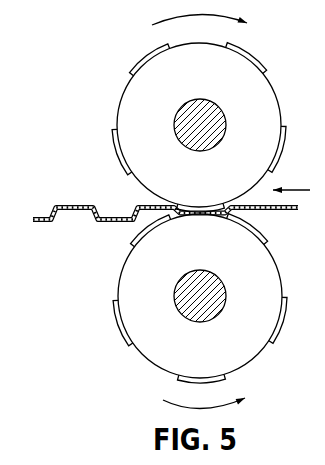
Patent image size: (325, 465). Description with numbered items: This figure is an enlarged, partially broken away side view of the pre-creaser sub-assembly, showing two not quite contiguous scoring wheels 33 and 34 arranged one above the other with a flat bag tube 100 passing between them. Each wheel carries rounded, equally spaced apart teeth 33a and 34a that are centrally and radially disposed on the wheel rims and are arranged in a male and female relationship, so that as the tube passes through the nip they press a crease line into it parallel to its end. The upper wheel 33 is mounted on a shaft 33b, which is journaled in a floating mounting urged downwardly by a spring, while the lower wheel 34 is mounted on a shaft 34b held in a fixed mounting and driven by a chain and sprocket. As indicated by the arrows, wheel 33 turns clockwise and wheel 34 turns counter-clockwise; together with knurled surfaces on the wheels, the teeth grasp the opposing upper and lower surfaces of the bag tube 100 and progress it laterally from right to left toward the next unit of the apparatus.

The scoring wheel 33 is at (267, 98).
The teeth 33a is at (261, 64).
The shaft 33b is at (176, 124).
The scoring wheel 34 is at (264, 268).
The teeth 34a is at (281, 336).
The shaft 34b is at (216, 314).
The flat bag tube 100 is at (37, 216).